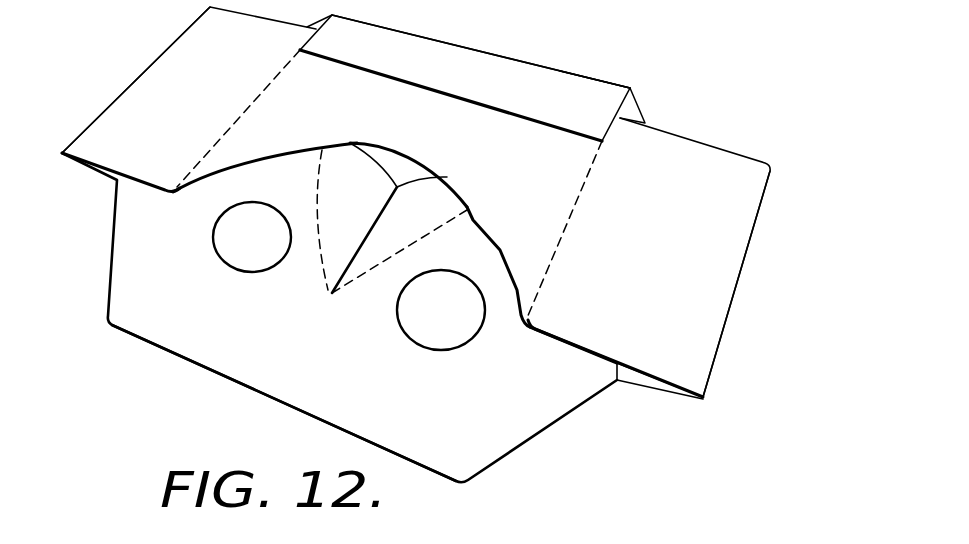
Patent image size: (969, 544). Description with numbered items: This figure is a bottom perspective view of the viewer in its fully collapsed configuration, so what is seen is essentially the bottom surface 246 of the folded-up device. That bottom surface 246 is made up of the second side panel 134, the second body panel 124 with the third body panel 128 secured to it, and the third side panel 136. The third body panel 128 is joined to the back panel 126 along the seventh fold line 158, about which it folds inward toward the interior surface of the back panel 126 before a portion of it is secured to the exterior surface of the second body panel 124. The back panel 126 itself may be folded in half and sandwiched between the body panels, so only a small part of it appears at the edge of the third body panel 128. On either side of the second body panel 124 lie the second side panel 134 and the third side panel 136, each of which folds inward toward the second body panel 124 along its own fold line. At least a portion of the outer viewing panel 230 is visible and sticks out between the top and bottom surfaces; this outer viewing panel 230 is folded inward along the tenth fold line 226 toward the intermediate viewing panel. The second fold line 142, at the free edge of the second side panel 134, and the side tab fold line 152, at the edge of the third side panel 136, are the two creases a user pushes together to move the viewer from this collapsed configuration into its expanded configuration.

The second body panel 124 is at (382, 120).
The back panel 126 is at (633, 107).
The third body panel 128 is at (448, 78).
The second side panel 134 is at (667, 262).
The third side panel 136 is at (210, 105).
The second fold line 142 is at (738, 280).
The side tab fold line 152 is at (160, 55).
The seventh fold line 158 is at (472, 48).
The tenth fold line 226 is at (258, 391).
The outer viewing panel 230 is at (325, 354).
The bottom surface 246 is at (593, 83).